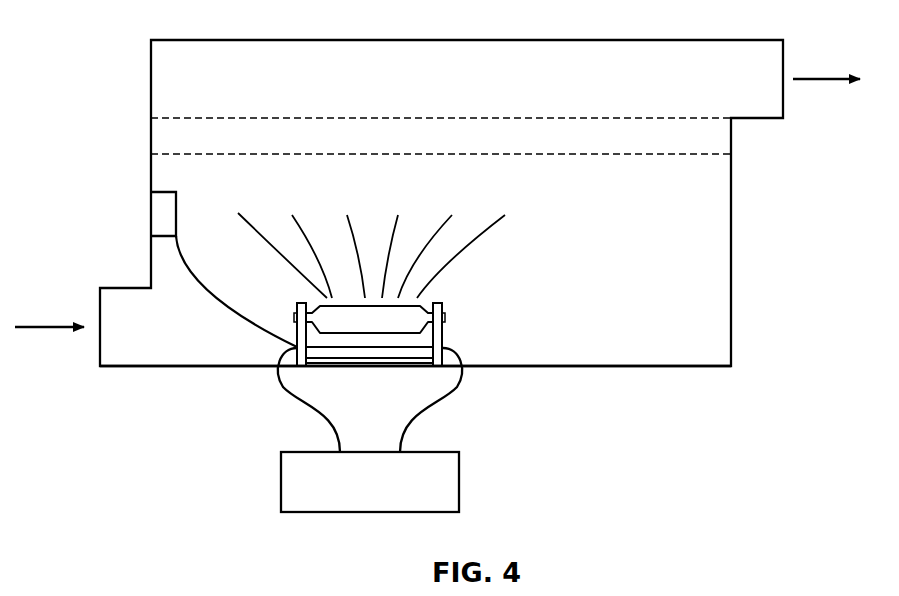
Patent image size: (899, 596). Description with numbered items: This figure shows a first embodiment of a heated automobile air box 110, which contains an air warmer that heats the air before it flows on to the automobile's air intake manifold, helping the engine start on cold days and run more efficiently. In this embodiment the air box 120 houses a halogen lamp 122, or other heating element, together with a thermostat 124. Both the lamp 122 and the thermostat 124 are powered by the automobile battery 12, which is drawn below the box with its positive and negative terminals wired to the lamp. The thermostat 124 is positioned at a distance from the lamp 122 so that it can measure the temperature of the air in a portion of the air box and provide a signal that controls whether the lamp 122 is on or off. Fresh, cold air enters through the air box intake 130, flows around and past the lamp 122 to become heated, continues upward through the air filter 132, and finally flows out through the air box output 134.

The heated automobile air box 110 is at (758, 293).
The air box 120 is at (178, 402).
The halogen lamp 122 is at (460, 314).
The thermostat 124 is at (188, 206).
The air box intake 130 is at (84, 292).
The air filter 132 is at (720, 137).
The air box output 134 is at (832, 60).
The automobile battery 12 is at (459, 480).